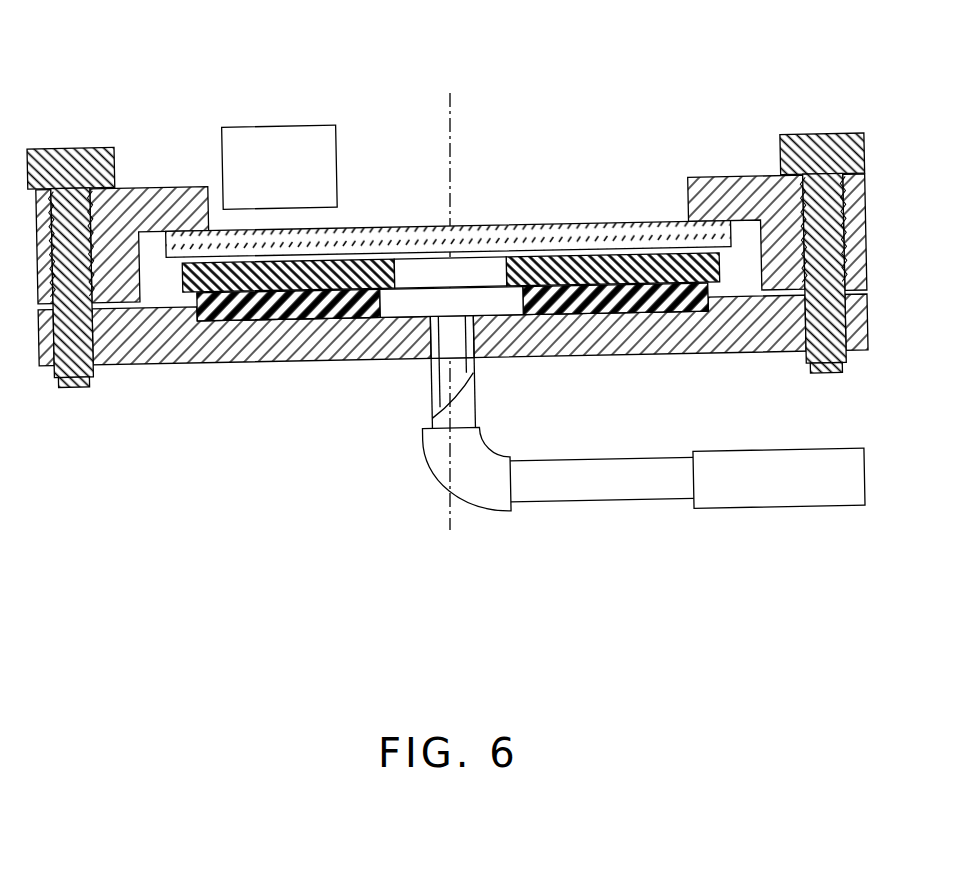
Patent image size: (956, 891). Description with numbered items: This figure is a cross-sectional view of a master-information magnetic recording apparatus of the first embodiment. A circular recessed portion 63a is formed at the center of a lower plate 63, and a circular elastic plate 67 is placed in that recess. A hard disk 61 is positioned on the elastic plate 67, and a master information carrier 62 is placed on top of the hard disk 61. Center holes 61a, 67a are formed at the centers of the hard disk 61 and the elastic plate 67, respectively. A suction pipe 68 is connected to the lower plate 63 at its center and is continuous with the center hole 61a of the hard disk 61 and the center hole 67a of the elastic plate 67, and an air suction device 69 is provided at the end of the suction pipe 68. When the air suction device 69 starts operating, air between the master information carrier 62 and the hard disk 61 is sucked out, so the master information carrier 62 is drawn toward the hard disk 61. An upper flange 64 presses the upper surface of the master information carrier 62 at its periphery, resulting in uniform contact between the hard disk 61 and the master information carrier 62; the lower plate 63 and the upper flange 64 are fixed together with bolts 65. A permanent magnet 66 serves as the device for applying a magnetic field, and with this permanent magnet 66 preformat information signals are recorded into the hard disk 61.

The hard disk 61 is at (623, 257).
The center hole 61a is at (430, 272).
The master information carrier 62 is at (577, 230).
The lower plate 63 is at (165, 343).
The recessed portion 63a is at (333, 300).
The upper flange 64 is at (723, 178).
The bolts 65 is at (70, 148).
The permanent magnet 66 is at (250, 137).
The elastic plate 67 is at (280, 307).
The center hole 67a is at (508, 300).
The suction pipe 68 is at (552, 495).
The air suction device 69 is at (763, 507).